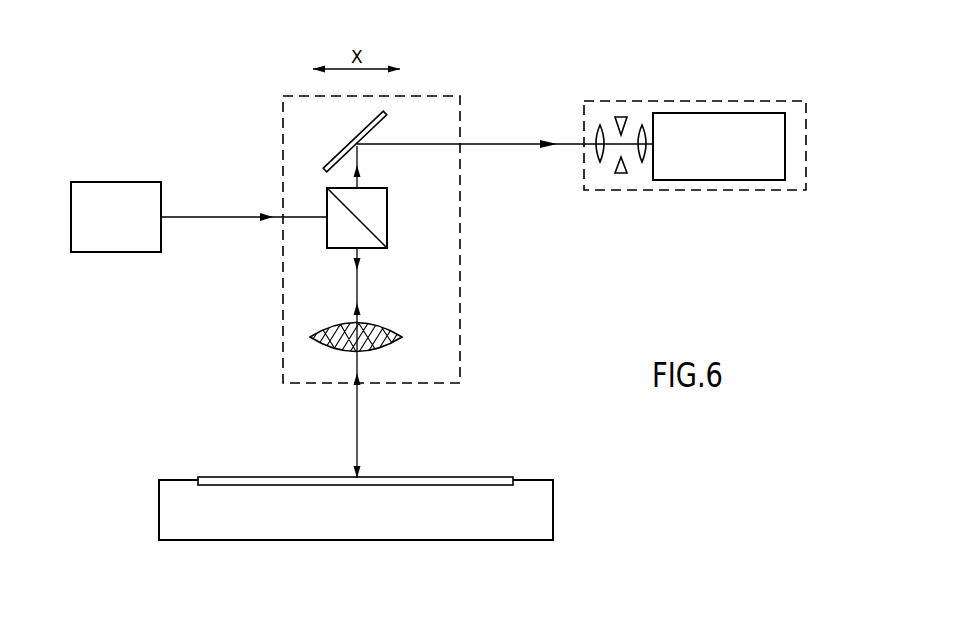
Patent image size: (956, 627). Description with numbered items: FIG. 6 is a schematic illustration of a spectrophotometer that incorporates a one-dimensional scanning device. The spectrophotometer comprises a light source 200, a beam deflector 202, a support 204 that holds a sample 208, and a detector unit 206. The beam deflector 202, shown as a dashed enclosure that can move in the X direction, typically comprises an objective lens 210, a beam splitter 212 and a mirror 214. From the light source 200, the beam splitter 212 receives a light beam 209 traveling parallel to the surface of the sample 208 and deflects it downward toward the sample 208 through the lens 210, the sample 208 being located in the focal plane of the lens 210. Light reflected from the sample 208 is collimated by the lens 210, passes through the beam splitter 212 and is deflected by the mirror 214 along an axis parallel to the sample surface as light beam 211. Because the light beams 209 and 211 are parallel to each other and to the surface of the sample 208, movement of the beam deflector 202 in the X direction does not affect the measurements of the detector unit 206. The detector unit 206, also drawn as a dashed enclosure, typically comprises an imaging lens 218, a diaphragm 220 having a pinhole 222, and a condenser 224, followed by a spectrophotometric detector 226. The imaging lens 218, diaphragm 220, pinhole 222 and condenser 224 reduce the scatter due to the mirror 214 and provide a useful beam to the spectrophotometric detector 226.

The light source 200 is at (133, 183).
The beam deflector 202 is at (290, 289).
The support 204 is at (493, 535).
The detector unit 206 is at (757, 100).
The sample 208 is at (452, 477).
The light beam 209 is at (213, 218).
The objective lens 210 is at (403, 337).
The light beam 211 is at (482, 143).
The beam splitter 212 is at (388, 217).
The mirror 214 is at (323, 167).
The imaging lens 218 is at (600, 128).
The diaphragm 220 is at (621, 115).
The pinhole 222 is at (617, 152).
The condenser 224 is at (642, 157).
The spectrophotometric detector 226 is at (740, 183).